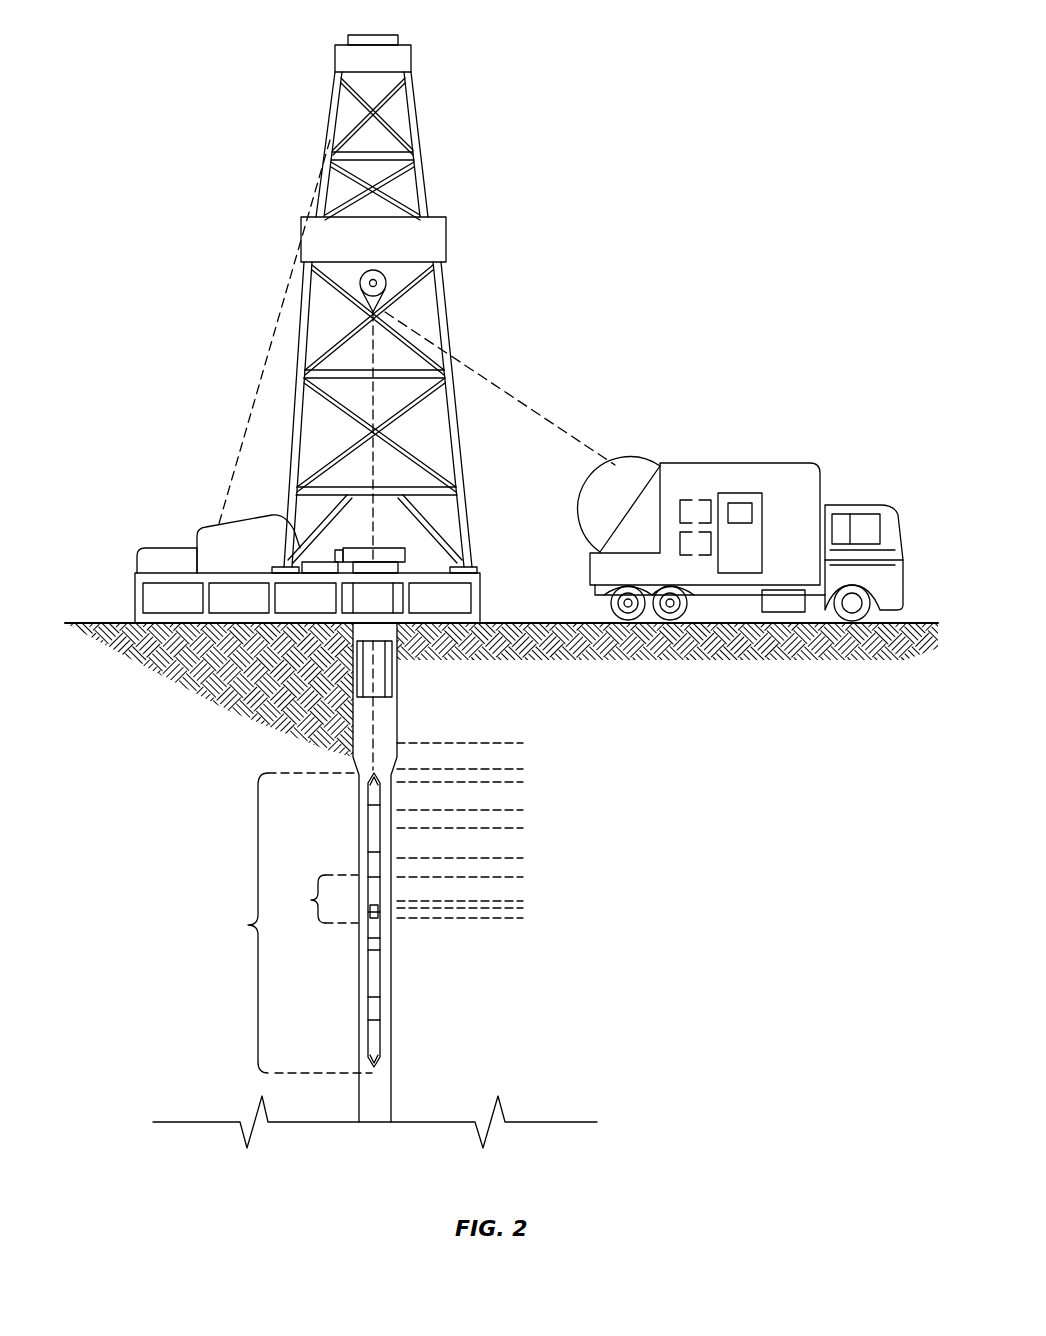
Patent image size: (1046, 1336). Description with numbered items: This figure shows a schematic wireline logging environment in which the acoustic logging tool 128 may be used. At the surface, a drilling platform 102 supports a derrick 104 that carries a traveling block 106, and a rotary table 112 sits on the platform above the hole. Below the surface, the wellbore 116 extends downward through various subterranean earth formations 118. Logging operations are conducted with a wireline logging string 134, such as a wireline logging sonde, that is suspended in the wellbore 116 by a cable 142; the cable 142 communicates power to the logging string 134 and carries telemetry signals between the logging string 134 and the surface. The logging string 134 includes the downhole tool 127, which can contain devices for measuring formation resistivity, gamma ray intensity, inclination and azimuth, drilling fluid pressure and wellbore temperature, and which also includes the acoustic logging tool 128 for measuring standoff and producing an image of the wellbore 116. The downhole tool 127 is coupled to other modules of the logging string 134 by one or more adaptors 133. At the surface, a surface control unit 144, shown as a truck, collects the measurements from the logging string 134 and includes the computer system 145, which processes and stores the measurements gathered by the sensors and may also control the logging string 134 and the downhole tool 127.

The drilling platform 102 is at (482, 597).
The derrick 104 is at (441, 315).
The traveling block 106 is at (360, 279).
The rotary table 112 is at (396, 548).
The wellbore 116 is at (358, 795).
The subterranean earth formations 118 is at (532, 742).
The downhole tool 127 is at (311, 899).
The acoustic logging tool 128 is at (376, 910).
The adaptors 133 is at (374, 866).
The wireline logging string 134 is at (286, 923).
The cable 142 is at (487, 380).
The surface control unit 144 is at (735, 463).
The computer system 145 is at (708, 498).